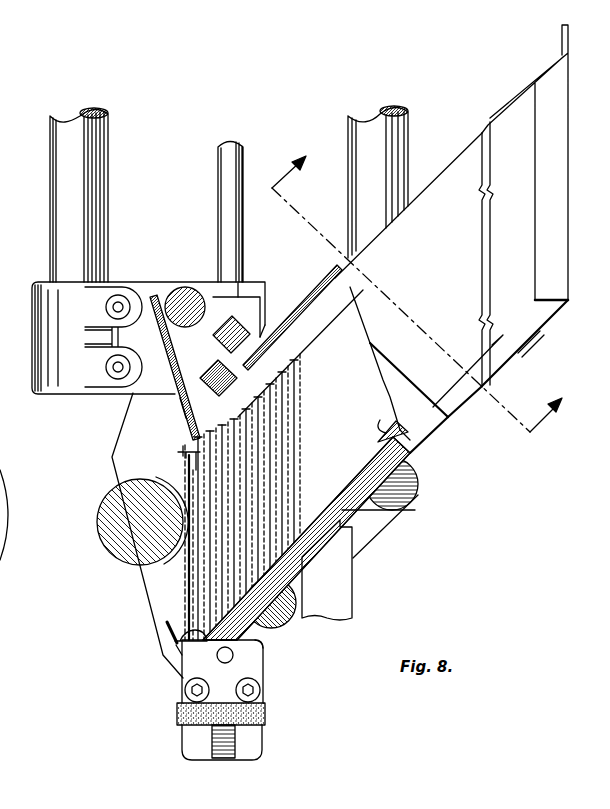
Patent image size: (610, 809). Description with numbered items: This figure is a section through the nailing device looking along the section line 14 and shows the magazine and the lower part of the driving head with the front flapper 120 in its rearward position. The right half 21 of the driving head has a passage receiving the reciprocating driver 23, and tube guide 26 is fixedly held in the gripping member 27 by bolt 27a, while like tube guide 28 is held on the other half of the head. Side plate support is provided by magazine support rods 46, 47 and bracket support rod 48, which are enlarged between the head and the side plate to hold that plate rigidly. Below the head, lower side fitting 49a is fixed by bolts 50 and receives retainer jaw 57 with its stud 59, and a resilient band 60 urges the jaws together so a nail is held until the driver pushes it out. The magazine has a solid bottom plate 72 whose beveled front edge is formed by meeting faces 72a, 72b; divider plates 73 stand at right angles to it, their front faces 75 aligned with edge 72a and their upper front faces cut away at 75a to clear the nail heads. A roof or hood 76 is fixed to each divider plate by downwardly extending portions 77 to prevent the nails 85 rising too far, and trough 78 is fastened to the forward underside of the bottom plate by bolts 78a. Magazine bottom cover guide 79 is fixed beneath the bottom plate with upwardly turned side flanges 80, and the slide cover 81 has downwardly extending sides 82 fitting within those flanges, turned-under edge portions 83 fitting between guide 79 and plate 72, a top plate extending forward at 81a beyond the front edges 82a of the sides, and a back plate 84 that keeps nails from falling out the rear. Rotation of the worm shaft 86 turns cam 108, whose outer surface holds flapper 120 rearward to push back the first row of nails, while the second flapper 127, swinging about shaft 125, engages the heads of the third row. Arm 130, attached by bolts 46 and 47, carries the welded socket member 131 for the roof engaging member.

The section line 14 is at (426, 289).
The right half of driving head 21 is at (117, 433).
The driver 23 is at (237, 205).
The tube guide 26 is at (88, 212).
The gripping member 27 is at (133, 337).
The bolt 27a is at (112, 316).
The tube guide 28 is at (362, 192).
The magazine support rod 46 is at (402, 505).
The magazine support rod 47 is at (288, 623).
The bracket support rod 48 is at (181, 288).
The lower side fitting 49a is at (248, 748).
The bolts 50 is at (185, 692).
The retainer jaw 57 is at (223, 756).
The stud 59 is at (232, 656).
The band 60 is at (266, 713).
The bottom plate 72 is at (320, 527).
The front edge meeting face 72a is at (162, 628).
The front edge meeting face 72b is at (175, 650).
The divider plate 73 is at (405, 438).
The front face of divider plate 75 is at (187, 602).
The cut-away upper front face 75a is at (180, 452).
The roof or hood portion 76 is at (180, 405).
The downwardly extending portion 77 is at (247, 497).
The trough 78 is at (172, 641).
The bolts 78a is at (258, 640).
The magazine bottom cover guide 79 is at (477, 398).
The side flange portion 80 is at (470, 403).
The slide cover 81 is at (443, 167).
The forward extension of top plate 81a is at (300, 287).
The downwardly extending side 82 is at (362, 238).
The front edge of side plate 82a is at (400, 370).
The turned under edge portion 83 is at (536, 336).
The back plate 84 is at (562, 177).
The nails 85 is at (178, 460).
The worm shaft 86 is at (110, 527).
The cam 108 is at (11, 504).
The front catch plate or flapper 120 is at (175, 385).
The shaft 125 is at (248, 287).
The second flapper 127 is at (265, 320).
The arm 130 is at (380, 537).
The socket member 131 is at (342, 585).